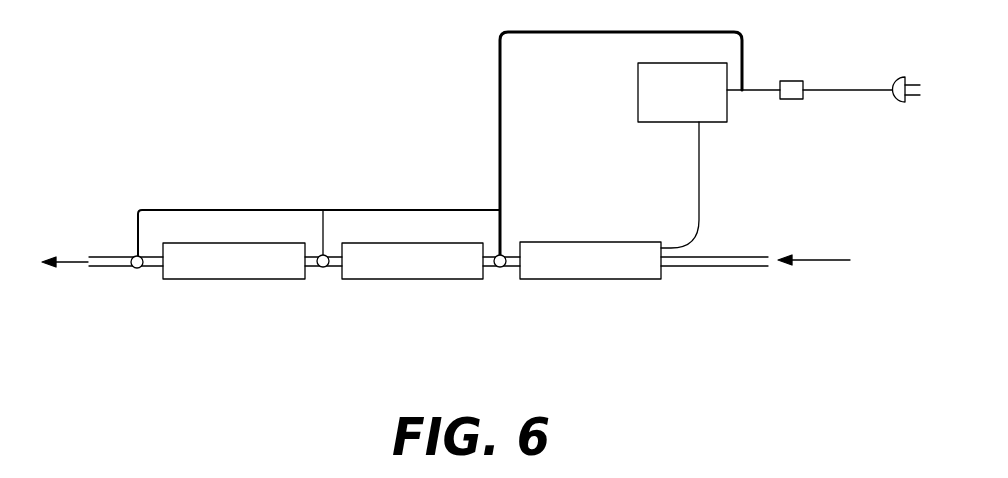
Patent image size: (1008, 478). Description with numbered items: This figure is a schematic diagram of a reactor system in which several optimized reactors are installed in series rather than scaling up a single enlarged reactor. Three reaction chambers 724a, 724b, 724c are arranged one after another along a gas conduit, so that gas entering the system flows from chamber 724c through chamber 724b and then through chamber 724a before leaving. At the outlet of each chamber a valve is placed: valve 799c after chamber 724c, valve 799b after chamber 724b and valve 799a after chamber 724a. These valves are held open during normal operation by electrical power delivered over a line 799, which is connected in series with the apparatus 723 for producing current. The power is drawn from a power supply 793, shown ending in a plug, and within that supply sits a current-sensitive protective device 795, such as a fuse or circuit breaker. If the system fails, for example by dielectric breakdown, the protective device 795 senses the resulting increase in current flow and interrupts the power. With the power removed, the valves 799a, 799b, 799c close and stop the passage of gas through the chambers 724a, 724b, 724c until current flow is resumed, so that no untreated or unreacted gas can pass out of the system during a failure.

The electrical wiring / power line 799 is at (500, 92).
The apparatus for producing current 723 is at (718, 87).
The current-sensitive protective device 795 is at (797, 97).
The power supply 793 is at (865, 90).
The valve 799a is at (137, 268).
The reaction chamber 724a is at (243, 280).
The valve 799b is at (323, 268).
The reaction chamber 724b is at (430, 280).
The valve 799c is at (500, 268).
The reaction chamber 724c is at (597, 280).